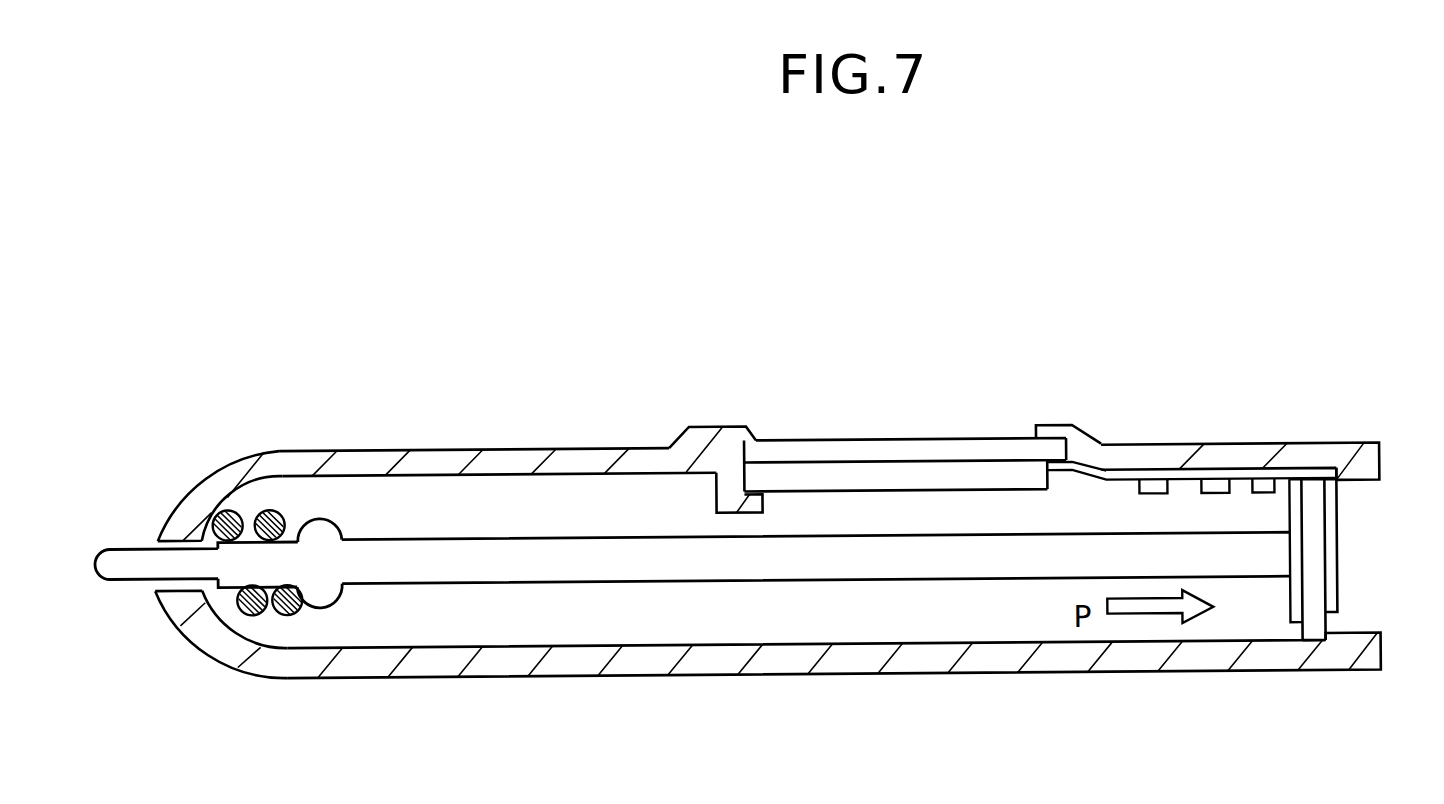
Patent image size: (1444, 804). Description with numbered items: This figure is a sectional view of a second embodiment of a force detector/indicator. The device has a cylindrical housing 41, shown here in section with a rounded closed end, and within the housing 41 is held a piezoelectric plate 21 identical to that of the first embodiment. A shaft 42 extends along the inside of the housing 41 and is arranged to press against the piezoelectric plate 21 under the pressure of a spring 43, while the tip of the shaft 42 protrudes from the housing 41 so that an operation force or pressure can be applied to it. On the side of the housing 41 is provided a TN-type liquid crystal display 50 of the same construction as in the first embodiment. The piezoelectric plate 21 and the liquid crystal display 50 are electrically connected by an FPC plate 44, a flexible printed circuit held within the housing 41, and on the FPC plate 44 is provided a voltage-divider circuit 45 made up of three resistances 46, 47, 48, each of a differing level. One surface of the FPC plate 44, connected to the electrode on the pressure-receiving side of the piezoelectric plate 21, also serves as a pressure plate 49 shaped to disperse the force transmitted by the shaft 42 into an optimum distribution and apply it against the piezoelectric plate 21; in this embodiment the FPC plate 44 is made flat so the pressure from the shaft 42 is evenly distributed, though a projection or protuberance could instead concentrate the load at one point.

The piezoelectric plate 21 is at (1349, 574).
The cylindrical housing 41 is at (467, 450).
The shaft 42 is at (420, 555).
The spring 43 is at (297, 607).
The FPC plate 44 is at (1110, 440).
The voltage-divider circuit 45 is at (1343, 255).
The resistance 46 is at (1160, 495).
The resistance 47 is at (1225, 486).
The resistance 48 is at (1270, 486).
The pressure plate 49 is at (1290, 593).
The liquid crystal display 50 is at (938, 414).